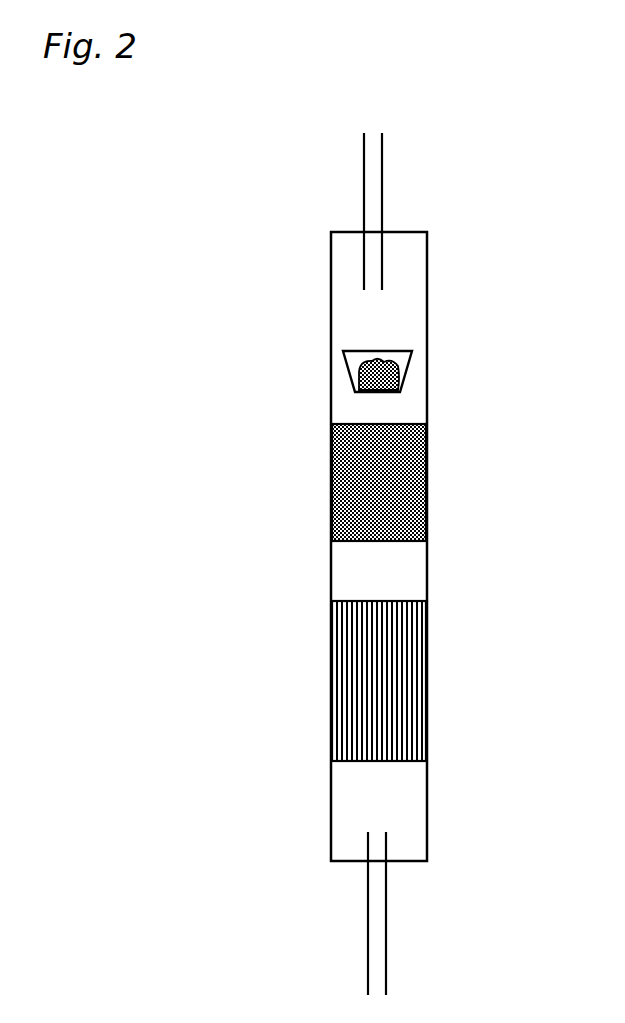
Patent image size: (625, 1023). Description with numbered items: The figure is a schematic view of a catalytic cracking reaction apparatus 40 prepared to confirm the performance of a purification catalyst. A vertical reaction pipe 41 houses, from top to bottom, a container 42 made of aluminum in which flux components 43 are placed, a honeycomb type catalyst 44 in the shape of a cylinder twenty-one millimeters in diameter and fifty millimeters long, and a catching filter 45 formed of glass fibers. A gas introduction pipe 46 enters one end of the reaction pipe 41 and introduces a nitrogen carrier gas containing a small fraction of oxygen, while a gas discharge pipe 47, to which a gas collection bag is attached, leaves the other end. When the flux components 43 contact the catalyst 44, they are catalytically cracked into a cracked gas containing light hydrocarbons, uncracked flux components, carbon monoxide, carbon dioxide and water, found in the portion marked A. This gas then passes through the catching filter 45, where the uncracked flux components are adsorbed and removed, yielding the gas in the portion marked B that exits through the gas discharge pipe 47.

The reaction apparatus 40 is at (303, 344).
The reaction pipe 41 is at (427, 262).
The container 42 is at (398, 350).
The flux components 43 is at (396, 377).
The honeycomb type catalyst 44 is at (408, 475).
The catching filter 45 is at (410, 670).
The gas introduction pipe 46 is at (379, 174).
The gas discharge pipe 47 is at (386, 932).